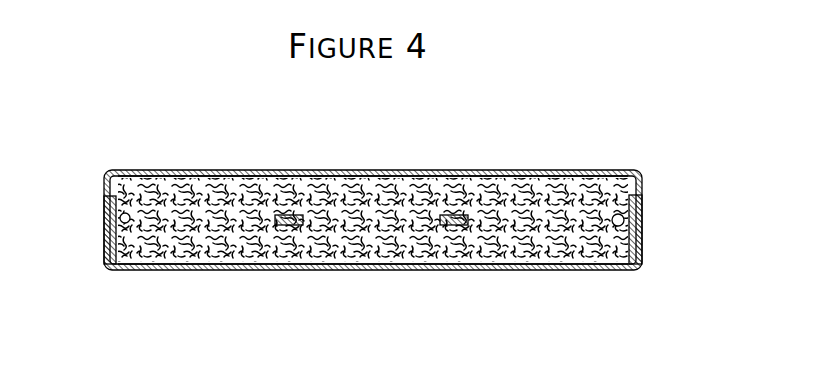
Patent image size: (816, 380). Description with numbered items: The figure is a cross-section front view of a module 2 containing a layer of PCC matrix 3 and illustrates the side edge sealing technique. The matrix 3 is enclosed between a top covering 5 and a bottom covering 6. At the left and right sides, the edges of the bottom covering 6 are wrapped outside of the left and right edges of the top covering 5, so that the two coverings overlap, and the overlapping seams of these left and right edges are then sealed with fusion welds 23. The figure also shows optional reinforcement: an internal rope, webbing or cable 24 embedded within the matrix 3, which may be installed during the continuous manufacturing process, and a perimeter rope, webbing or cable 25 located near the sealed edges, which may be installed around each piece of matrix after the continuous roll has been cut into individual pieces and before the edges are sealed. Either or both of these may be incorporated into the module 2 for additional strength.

The insulating panel casing 2 is at (564, 163).
The PCC matrix 3 is at (594, 188).
The top covering 5 is at (221, 176).
The bottom covering 6 is at (197, 268).
The fusion welds 23 is at (104, 223).
The internal rope, webbing or cable 24 is at (445, 210).
The perimeter rope, webbing or cable 25 is at (127, 212).